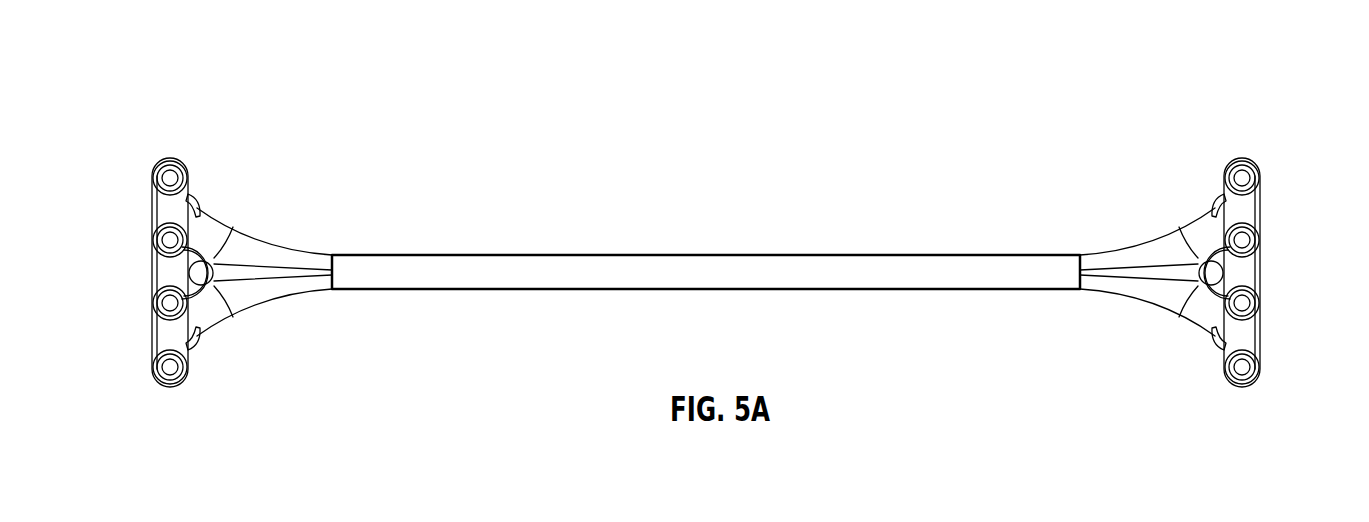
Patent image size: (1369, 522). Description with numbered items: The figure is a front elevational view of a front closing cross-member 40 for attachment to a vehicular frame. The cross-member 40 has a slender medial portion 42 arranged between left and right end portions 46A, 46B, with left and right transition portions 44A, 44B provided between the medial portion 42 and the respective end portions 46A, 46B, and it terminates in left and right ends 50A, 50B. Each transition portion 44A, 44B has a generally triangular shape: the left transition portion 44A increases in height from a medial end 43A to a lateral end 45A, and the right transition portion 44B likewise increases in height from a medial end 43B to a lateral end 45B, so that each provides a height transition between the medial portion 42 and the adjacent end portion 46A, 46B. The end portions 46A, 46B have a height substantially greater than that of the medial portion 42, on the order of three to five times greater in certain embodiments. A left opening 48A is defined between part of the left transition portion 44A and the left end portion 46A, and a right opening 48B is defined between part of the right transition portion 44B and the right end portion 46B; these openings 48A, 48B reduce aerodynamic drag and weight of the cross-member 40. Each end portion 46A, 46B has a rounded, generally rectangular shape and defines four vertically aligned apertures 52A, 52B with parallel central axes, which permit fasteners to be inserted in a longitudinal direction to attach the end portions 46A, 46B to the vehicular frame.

The front closing cross-member 40 is at (449, 95).
The medial portion 42 is at (765, 265).
The medial end of left transition portion 43A is at (1079, 290).
The medial end of right transition portion 43B is at (333, 290).
The left transition portion 44A is at (1079, 152).
The right transition portion 44B is at (193, 152).
The lateral end of left transition portion 45A is at (1214, 328).
The lateral end of right transition portion 45B is at (197, 337).
The left end portion 46A is at (1217, 123).
The right end portion 46B is at (152, 123).
The left opening 48A is at (1209, 273).
The right opening 48B is at (203, 273).
The left end 50A is at (1261, 332).
The right end 50B is at (150, 332).
The apertures of left end portion 52A is at (1244, 240).
The apertures of right end portion 52B is at (167, 240).